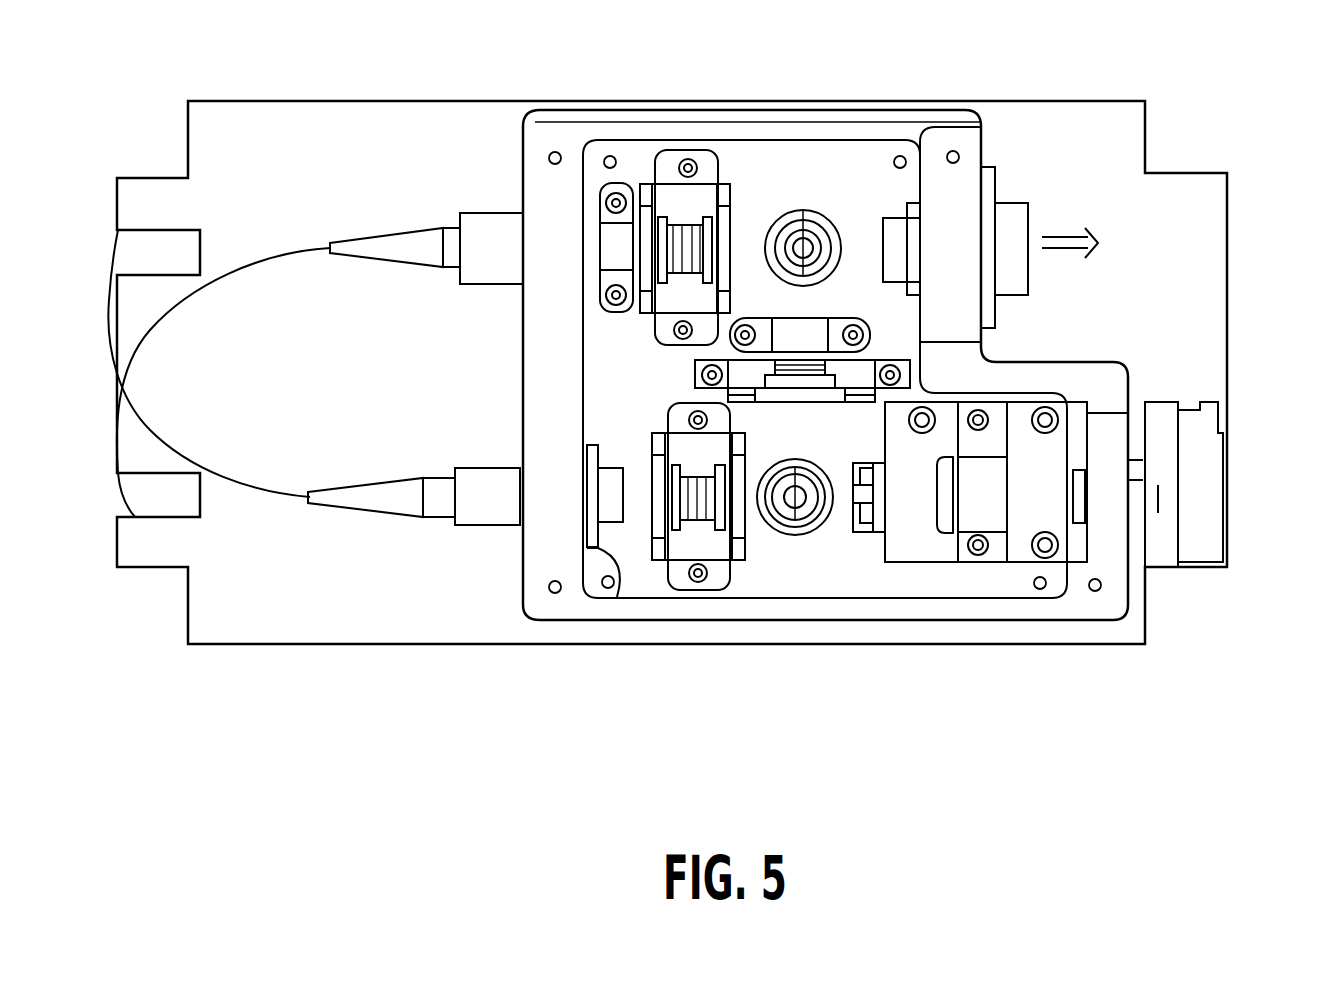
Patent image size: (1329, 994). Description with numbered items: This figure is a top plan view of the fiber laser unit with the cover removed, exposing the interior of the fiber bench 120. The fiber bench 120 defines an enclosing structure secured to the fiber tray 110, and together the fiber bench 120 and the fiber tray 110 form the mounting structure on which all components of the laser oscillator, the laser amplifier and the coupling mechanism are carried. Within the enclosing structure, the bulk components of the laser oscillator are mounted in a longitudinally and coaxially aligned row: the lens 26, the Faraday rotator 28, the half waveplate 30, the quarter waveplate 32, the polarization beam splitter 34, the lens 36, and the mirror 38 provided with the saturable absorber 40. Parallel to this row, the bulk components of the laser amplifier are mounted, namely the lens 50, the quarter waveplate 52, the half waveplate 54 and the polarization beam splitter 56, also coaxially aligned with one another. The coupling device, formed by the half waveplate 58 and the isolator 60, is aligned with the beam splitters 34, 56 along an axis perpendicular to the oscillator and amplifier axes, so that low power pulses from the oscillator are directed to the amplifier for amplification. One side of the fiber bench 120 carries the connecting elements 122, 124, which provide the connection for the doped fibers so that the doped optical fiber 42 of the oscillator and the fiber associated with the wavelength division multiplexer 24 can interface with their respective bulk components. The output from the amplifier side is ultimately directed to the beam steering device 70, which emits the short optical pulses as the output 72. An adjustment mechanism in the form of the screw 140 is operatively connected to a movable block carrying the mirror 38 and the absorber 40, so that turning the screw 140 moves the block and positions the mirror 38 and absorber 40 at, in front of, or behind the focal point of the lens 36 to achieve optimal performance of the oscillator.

The fiber tray 110 is at (290, 100).
The fiber bench 120 is at (562, 110).
The wavelength division multiplexer 24 is at (282, 248).
The doped optical fiber 42 is at (217, 477).
The connecting element 124 is at (470, 285).
The connecting element 122 is at (435, 478).
The lens 50 is at (620, 183).
The quarter waveplate 52 is at (735, 187).
The half waveplate 54 is at (718, 158).
The polarization beam splitter 56 is at (803, 210).
The beam steering device 70 is at (918, 203).
The output 72 is at (1058, 237).
The half waveplate 58 is at (868, 332).
The isolator 60 is at (920, 375).
The Faraday rotator 28 is at (615, 468).
The lens 26 is at (617, 597).
The half waveplate 30 is at (697, 566).
The quarter waveplate 32 is at (720, 590).
The polarization beam splitter 34 is at (797, 520).
The lens 36 is at (875, 535).
The mirror 38 is at (1006, 557).
The saturable absorber 40 is at (947, 563).
The screw 140 is at (1212, 405).